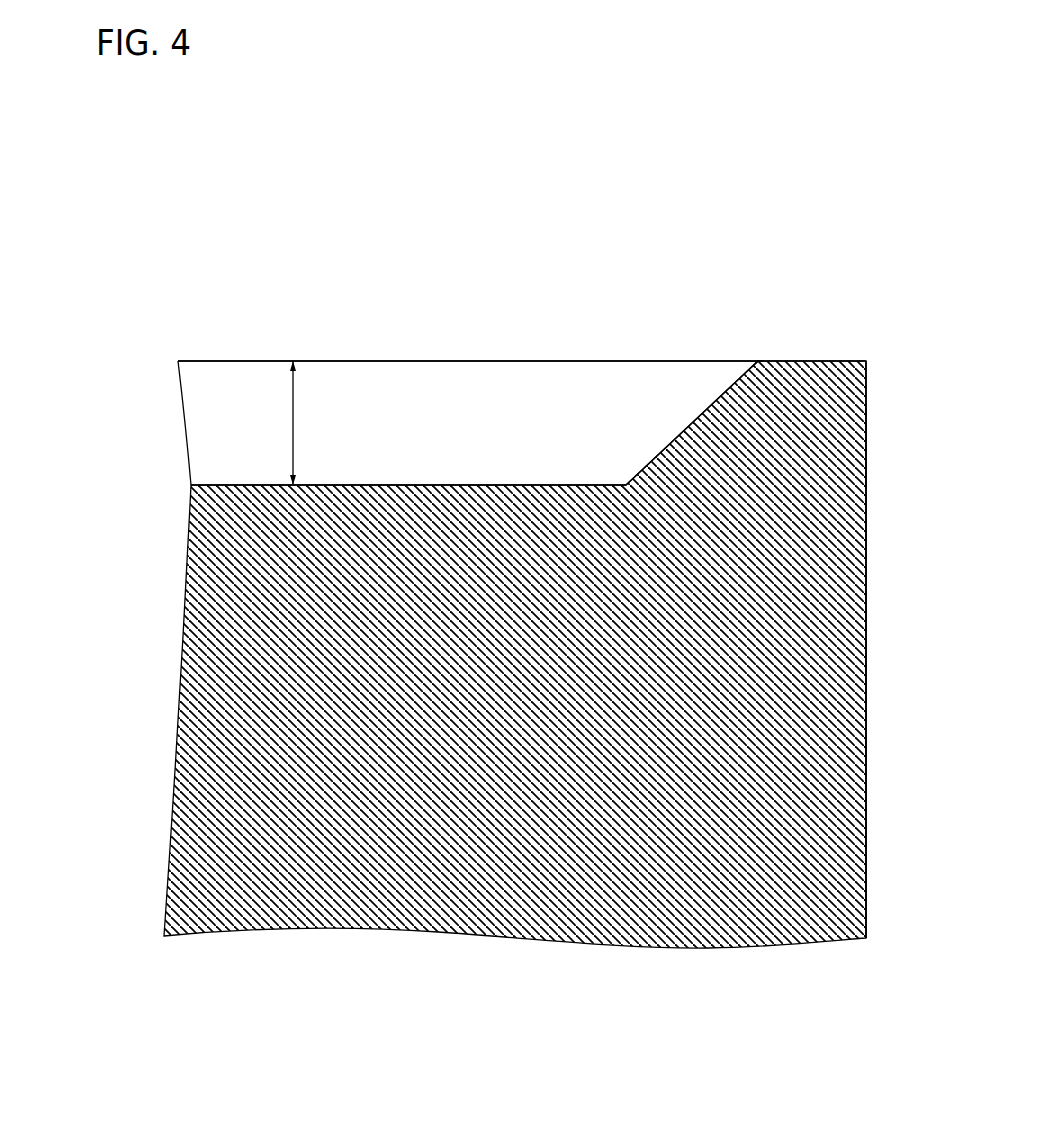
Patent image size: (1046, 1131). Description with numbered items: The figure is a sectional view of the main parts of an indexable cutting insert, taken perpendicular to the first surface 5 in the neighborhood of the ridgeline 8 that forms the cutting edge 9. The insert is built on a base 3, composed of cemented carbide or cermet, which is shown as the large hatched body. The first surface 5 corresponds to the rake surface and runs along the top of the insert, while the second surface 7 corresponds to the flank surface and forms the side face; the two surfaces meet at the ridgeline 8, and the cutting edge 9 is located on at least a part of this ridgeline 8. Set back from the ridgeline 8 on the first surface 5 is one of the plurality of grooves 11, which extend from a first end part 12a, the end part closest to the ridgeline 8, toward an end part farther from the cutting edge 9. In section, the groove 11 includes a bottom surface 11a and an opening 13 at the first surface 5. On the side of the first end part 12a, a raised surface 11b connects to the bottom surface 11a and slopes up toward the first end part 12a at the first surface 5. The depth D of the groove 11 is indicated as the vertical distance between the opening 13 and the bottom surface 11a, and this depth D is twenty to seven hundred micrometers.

The base 3 is at (263, 650).
The first surface 5 is at (800, 353).
The second surface 7 is at (860, 458).
The ridgeline 8 is at (857, 353).
The cutting edge 9 is at (857, 353).
The groove 11 is at (442, 407).
The bottom surface 11a is at (492, 477).
The raised surface 11b is at (667, 423).
The first end part 12a is at (750, 353).
The opening 13 is at (357, 353).
The depth D is at (307, 423).